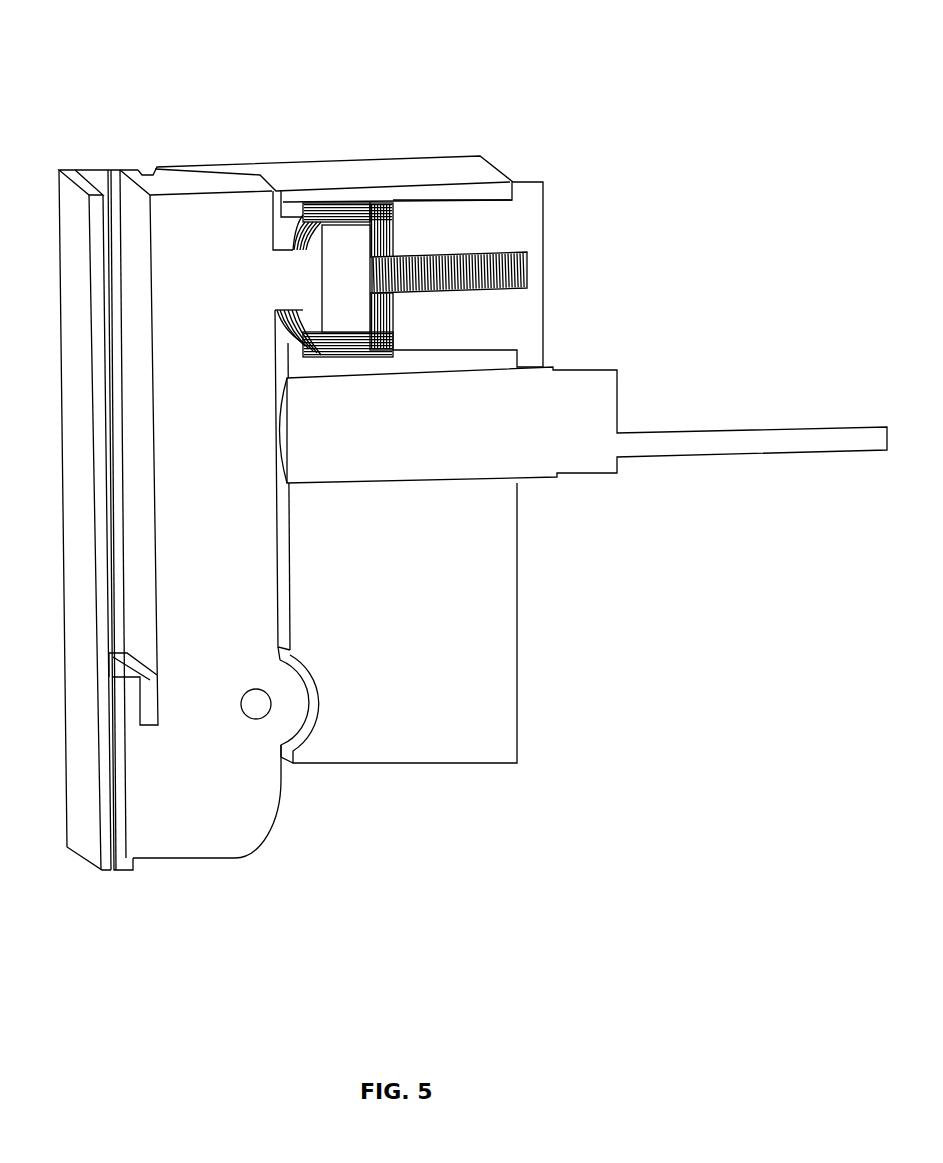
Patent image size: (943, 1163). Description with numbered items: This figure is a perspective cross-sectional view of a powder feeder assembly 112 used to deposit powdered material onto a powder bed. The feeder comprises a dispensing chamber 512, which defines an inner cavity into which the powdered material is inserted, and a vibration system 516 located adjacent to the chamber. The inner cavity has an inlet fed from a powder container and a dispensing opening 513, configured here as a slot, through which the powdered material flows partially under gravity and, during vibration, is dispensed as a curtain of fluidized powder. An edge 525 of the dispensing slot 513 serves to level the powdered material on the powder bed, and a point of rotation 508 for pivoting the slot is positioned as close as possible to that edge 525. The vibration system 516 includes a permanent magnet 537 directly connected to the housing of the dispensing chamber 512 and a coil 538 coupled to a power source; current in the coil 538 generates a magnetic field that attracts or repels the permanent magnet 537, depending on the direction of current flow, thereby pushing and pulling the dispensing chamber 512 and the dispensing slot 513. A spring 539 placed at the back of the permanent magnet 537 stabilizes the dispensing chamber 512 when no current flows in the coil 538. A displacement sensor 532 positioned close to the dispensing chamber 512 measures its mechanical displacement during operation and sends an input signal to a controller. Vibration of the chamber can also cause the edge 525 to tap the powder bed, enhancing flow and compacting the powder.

The actuator assembly 112 is at (647, 42).
The point of rotation 508 is at (260, 712).
The dispensing chamber 512 is at (138, 562).
The dispensing opening 513 is at (113, 872).
The vibration system 516 is at (307, 273).
The edge 525 is at (137, 873).
The displacement sensor 532 is at (518, 442).
The permanent magnet 537 is at (342, 237).
The coil 538 is at (368, 215).
The spring 539 is at (468, 275).